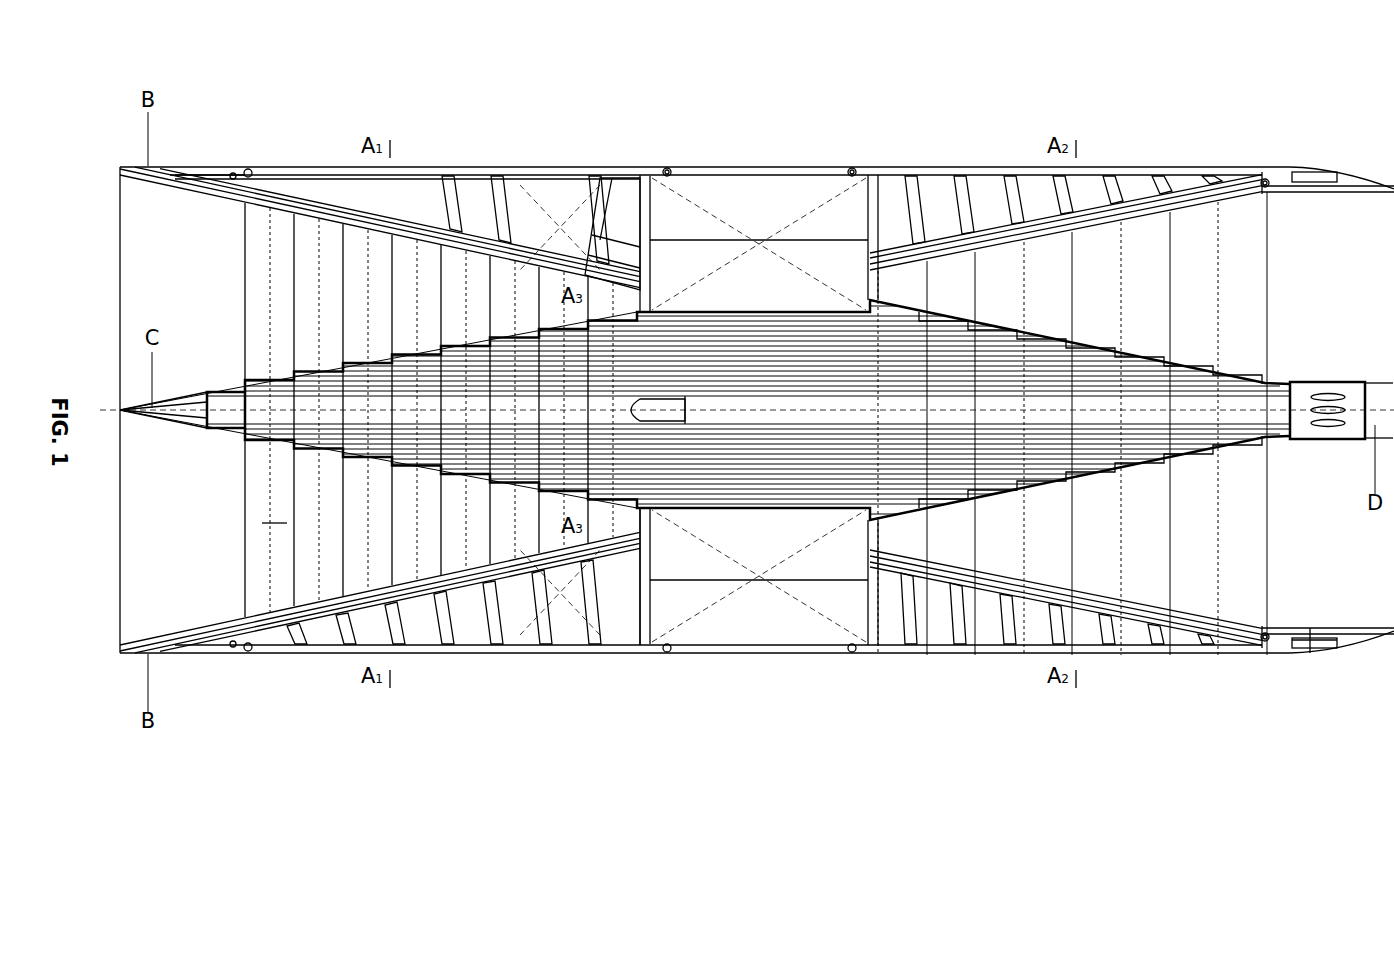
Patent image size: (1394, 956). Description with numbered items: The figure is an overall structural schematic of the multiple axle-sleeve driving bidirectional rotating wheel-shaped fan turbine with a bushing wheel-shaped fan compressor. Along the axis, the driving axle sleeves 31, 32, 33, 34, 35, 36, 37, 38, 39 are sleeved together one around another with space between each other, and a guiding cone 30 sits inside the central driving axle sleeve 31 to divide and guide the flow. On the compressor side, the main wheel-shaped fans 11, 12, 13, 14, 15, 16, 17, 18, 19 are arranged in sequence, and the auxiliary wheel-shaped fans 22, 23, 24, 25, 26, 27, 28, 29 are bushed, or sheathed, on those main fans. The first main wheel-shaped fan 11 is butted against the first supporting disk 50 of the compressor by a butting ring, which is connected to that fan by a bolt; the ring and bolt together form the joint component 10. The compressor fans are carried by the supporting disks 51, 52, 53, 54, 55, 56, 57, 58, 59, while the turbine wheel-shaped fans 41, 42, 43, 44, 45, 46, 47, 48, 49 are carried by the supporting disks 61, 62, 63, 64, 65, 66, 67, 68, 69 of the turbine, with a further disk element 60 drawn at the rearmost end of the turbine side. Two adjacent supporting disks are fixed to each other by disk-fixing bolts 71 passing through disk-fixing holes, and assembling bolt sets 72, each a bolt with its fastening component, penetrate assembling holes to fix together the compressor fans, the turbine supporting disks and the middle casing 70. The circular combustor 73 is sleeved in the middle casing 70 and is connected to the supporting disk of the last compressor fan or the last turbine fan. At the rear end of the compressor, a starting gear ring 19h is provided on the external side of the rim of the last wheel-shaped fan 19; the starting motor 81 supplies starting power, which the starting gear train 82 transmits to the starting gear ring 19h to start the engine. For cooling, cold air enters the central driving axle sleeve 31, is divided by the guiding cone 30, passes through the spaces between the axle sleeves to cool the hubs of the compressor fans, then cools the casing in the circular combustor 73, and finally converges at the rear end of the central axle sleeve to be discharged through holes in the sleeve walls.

The butting ring and bolt 10 is at (200, 172).
The first main wheel-shaped fan of the compressor 11 is at (172, 170).
The main wheel-shaped fan of the compressor 12 is at (262, 523).
The main wheel-shaped fan of the compressor 13 is at (335, 523).
The main wheel-shaped fan of the compressor 14 is at (384, 523).
The main wheel-shaped fan of the compressor 15 is at (432, 523).
The main wheel-shaped fan of the compressor 16 is at (481, 523).
The main wheel-shaped fan of the compressor 17 is at (529, 523).
The main wheel-shaped fan of the compressor 18 is at (553, 523).
The last wheel-shaped fan of the compressor 19 is at (601, 523).
The starting gear ring 19h is at (585, 245).
The auxiliary wheel-shaped fan 22 is at (262, 479).
The auxiliary wheel-shaped fan 23 is at (310, 485).
The auxiliary wheel-shaped fan 24 is at (359, 490).
The auxiliary wheel-shaped fan 25 is at (407, 495).
The auxiliary wheel-shaped fan 26 is at (456, 501).
The auxiliary wheel-shaped fan 27 is at (504, 506).
The auxiliary wheel-shaped fan 28 is at (553, 511).
The auxiliary wheel-shaped fan 29 is at (601, 517).
The guiding cone 30 is at (684, 398).
The central driving axle sleeve 31 is at (1337, 380).
The driving axle sleeve 32 is at (1243, 378).
The driving axle sleeve 33 is at (1194, 368).
The driving axle sleeve 34 is at (1145, 358).
The driving axle sleeve 35 is at (1096, 347).
The driving axle sleeve 36 is at (1047, 337).
The driving axle sleeve 37 is at (998, 327).
The driving axle sleeve 38 is at (949, 316).
The driving axle sleeve 39 is at (900, 306).
The wheel-shaped fan of the turbine 41 is at (1291, 535).
The wheel-shaped fan of the turbine 42 is at (1242, 535).
The wheel-shaped fan of the turbine 43 is at (1194, 535).
The wheel-shaped fan of the turbine 44 is at (1145, 535).
The wheel-shaped fan of the turbine 45 is at (1096, 535).
The wheel-shaped fan of the turbine 46 is at (1048, 535).
The wheel-shaped fan of the turbine 47 is at (999, 535).
The wheel-shaped fan of the turbine 48 is at (951, 535).
The wheel-shaped fan of the turbine 49 is at (902, 535).
The first supporting disk of the compressor 50 is at (236, 174).
The supporting disk of the compressor 51 is at (237, 656).
The supporting disk of the compressor 52 is at (285, 656).
The supporting disk of the compressor 53 is at (334, 656).
The supporting disk of the compressor 54 is at (383, 656).
The supporting disk of the compressor 55 is at (432, 656).
The supporting disk of the compressor 56 is at (480, 656).
The supporting disk of the compressor 57 is at (529, 656).
The supporting disk of the compressor 58 is at (578, 656).
The supporting disk of the compressor 59 is at (626, 656).
The partition plate 60 is at (1315, 656).
The supporting disk of the turbine 61 is at (1267, 656).
The supporting disk of the turbine 62 is at (1218, 656).
The supporting disk of the turbine 63 is at (1170, 656).
The supporting disk of the turbine 64 is at (1121, 656).
The supporting disk of the turbine 65 is at (1072, 656).
The supporting disk of the turbine 66 is at (1024, 656).
The supporting disk of the turbine 67 is at (975, 656).
The supporting disk of the turbine 68 is at (927, 656).
The supporting disk of the turbine 69 is at (878, 656).
The middle casing 70 is at (760, 168).
The disk-fixing bolt 71 is at (478, 240).
The assembling bolt set 72 is at (667, 168).
The circular combustor 73 is at (805, 275).
The starting motor 81 is at (526, 215).
The starting gear train 82 is at (623, 230).